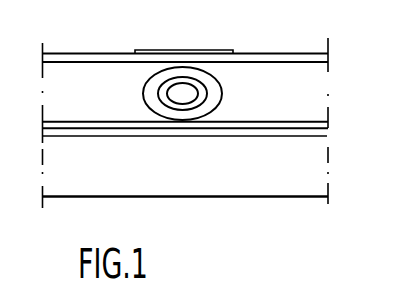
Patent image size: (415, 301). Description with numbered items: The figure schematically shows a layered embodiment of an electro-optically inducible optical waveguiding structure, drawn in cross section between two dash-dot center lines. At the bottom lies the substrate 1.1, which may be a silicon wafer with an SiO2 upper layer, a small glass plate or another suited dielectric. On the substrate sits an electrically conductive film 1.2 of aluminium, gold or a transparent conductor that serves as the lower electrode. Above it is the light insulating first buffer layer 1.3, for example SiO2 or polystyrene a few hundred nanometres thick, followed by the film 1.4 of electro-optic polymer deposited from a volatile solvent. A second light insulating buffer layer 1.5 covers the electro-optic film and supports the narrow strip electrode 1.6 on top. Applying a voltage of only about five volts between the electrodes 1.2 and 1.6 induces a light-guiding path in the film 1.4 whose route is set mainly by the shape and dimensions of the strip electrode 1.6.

The substrate 1.1 is at (274, 181).
The electrically conductive film 1.2 is at (305, 132).
The first buffer layer 1.3 is at (248, 123).
The film of electro-optic material 1.4 is at (288, 97).
The second buffer layer 1.5 is at (282, 58).
The strip electrode 1.6 is at (187, 50).